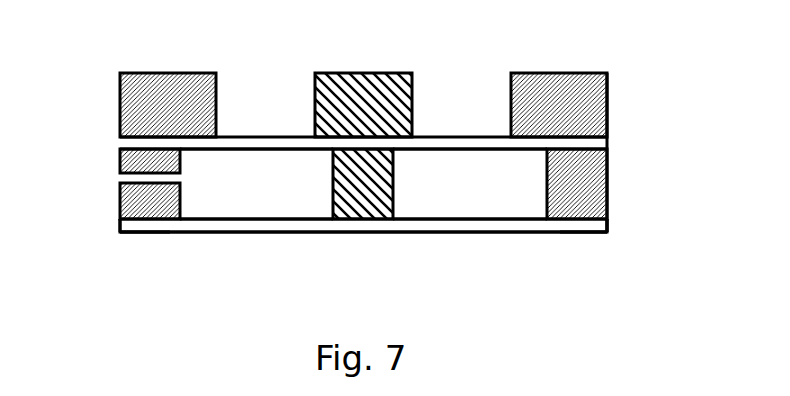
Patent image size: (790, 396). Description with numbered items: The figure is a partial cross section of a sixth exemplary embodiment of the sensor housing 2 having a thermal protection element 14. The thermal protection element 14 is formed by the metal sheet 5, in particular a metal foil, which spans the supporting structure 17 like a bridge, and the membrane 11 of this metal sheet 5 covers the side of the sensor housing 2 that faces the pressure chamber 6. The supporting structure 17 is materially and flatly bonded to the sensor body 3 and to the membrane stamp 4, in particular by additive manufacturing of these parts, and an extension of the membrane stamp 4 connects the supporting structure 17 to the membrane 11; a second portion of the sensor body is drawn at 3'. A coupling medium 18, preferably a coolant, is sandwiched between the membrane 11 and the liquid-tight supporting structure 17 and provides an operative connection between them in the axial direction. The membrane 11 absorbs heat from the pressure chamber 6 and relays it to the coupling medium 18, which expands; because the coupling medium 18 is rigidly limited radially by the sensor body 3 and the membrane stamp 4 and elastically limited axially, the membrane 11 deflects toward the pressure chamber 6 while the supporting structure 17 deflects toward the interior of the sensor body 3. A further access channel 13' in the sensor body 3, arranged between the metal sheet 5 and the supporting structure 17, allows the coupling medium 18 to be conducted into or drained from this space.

The sensor housing 2 is at (85, 65).
The sensor body 3 is at (588, 105).
The second electrode layer 3' is at (609, 184).
The membrane stamp 4 is at (412, 88).
The metal sheet 5 is at (593, 232).
The pressure chamber 6 is at (363, 262).
The membrane 11 is at (220, 224).
The further access channel 13' is at (116, 184).
The thermal protection element 14 is at (109, 235).
The supporting structure 17 is at (278, 146).
The coupling medium 18 is at (363, 184).